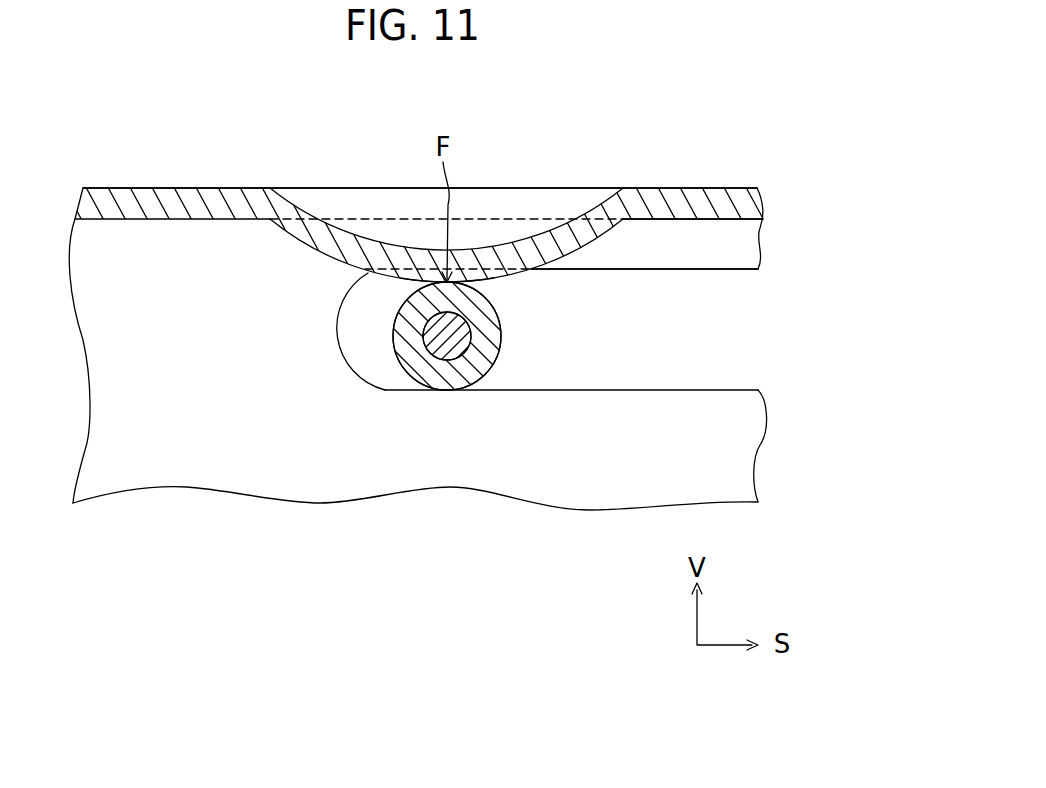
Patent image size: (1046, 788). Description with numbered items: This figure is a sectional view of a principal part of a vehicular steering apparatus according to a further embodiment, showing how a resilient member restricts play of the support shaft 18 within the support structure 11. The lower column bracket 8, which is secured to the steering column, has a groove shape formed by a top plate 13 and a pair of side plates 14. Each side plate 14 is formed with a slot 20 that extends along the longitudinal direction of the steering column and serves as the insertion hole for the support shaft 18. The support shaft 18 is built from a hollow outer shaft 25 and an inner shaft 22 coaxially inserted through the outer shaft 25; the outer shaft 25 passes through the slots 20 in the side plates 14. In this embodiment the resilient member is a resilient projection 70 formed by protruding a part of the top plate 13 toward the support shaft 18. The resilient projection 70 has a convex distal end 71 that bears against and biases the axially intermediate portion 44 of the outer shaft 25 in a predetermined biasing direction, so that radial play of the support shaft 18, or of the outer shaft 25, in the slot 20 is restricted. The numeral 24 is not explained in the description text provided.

The lower column bracket 8 is at (772, 227).
The support structure 11 is at (730, 174).
The top plate 13 is at (648, 196).
The side plates 14 is at (743, 258).
The support shaft 18 is at (388, 547).
The slot 20 is at (695, 269).
The inner shaft 22 is at (443, 350).
The inner layer 24 is at (445, 345).
The outer shaft 25 is at (467, 367).
The axially intermediate portion 44 is at (417, 360).
The resilient projection 70 is at (358, 232).
The convex distal end 71 is at (463, 276).